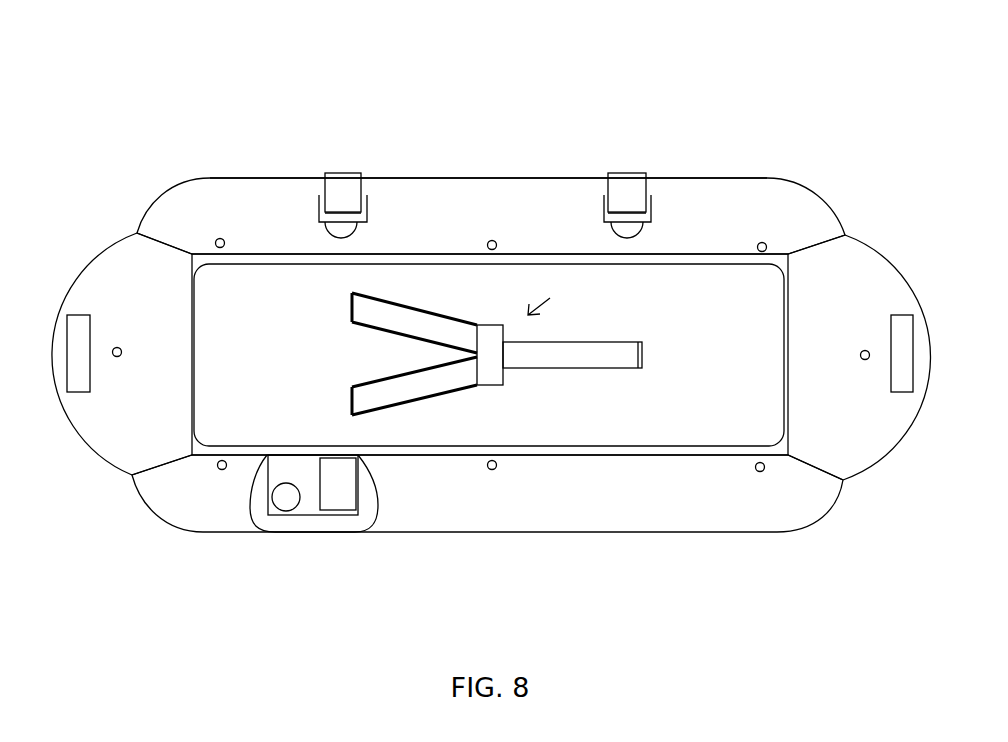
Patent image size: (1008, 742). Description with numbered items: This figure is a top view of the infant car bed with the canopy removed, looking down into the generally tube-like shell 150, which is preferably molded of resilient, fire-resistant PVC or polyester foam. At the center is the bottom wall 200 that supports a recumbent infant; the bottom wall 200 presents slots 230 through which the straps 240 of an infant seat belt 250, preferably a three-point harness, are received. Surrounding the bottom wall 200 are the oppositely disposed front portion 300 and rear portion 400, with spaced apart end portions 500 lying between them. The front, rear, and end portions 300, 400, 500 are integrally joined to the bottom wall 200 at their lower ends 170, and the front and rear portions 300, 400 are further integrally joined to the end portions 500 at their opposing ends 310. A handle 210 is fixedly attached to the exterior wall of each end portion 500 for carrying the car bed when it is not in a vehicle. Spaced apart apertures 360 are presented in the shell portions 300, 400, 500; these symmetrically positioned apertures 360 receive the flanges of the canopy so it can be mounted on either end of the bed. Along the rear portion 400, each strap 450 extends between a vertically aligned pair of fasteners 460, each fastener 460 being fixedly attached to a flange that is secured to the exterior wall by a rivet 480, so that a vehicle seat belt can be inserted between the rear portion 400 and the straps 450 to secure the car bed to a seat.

The shell 150 is at (453, 86).
The lower ends 170 is at (250, 263).
The bottom wall 200 is at (727, 319).
The handle 210 is at (90, 315).
The slots 230 is at (350, 305).
The straps 240 is at (555, 290).
The infant seat belt 250 is at (428, 377).
The front portion 300 is at (635, 532).
The opposing ends 310 is at (162, 240).
The apertures 360 is at (220, 238).
The rear portion 400 is at (535, 178).
The strap 450 is at (345, 180).
The fastener 460 is at (367, 208).
The rivet 480 is at (325, 228).
The end portions 500 is at (108, 247).